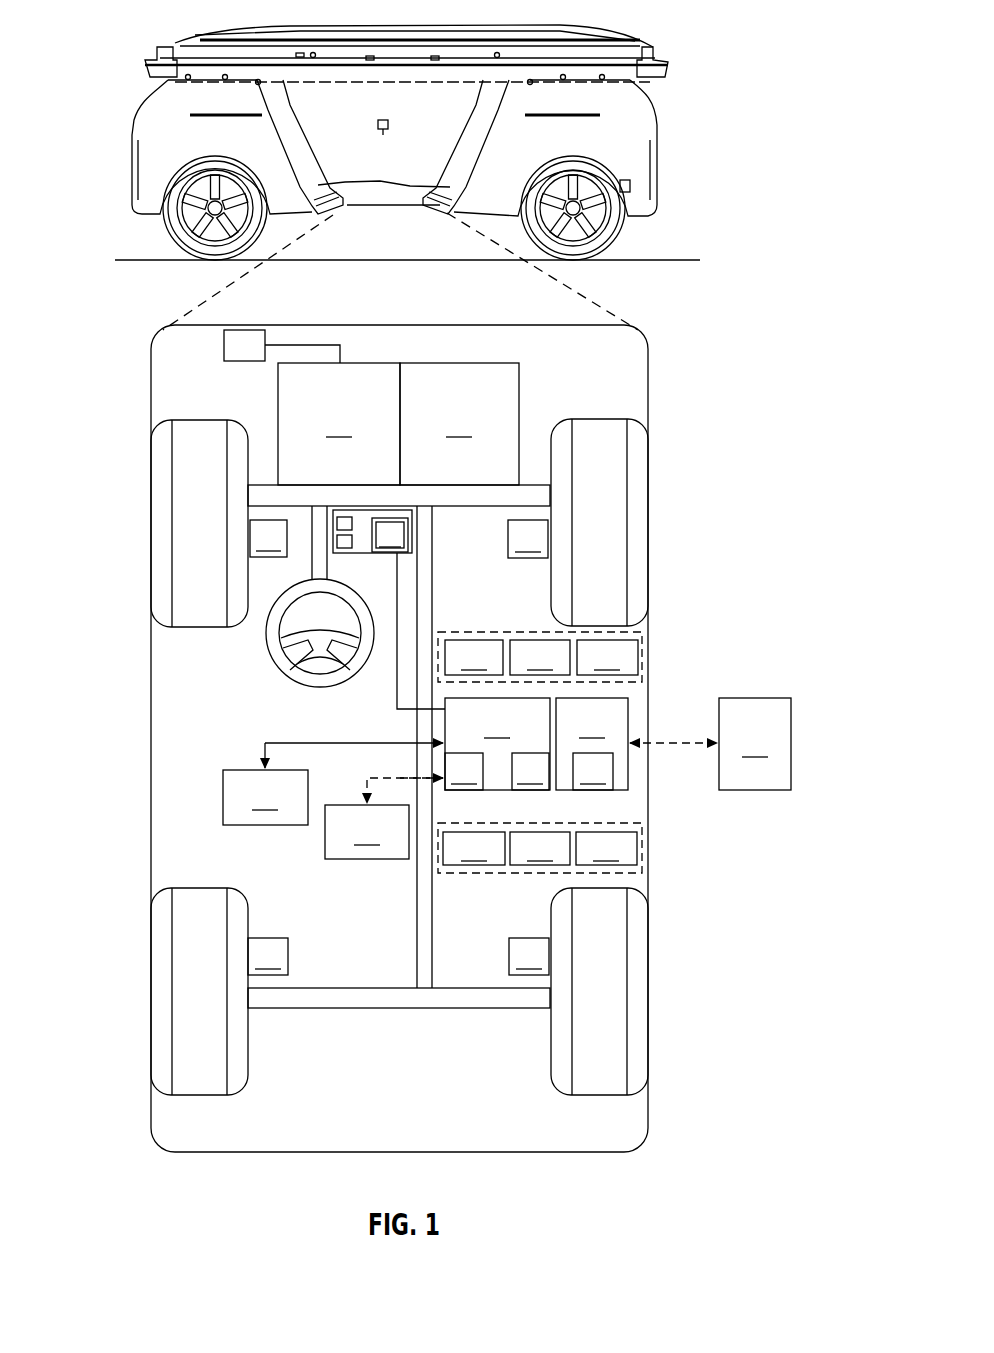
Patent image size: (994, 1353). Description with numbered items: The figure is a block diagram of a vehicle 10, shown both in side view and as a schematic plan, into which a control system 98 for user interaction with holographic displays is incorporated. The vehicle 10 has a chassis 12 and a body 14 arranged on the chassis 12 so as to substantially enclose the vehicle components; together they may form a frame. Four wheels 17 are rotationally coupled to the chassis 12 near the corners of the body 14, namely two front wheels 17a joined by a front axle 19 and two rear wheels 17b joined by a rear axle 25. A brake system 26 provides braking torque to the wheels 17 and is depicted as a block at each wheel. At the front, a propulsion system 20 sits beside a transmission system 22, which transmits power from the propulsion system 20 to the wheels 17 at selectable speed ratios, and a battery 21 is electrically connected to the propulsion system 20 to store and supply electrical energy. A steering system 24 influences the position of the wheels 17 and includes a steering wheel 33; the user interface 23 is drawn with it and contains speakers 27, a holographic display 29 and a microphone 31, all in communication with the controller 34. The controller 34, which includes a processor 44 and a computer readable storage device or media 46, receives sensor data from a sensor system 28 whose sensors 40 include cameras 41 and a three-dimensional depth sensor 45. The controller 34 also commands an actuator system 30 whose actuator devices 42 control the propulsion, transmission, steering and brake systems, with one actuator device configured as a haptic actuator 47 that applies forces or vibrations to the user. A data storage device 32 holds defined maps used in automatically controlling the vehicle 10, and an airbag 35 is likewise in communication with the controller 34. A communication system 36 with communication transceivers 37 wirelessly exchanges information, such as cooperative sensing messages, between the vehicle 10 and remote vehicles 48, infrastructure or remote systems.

The vehicle 10 is at (590, 32).
The chassis 12 is at (417, 900).
The body 14 is at (151, 711).
The front and rear wheels 17 is at (401, 748).
The front wheels 17a is at (162, 523).
The rear wheels 17b is at (162, 992).
The front axle 19 is at (497, 507).
The propulsion system 20 is at (339, 424).
The battery 21 is at (247, 330).
The transmission system 22 is at (459, 424).
The user interface 23 is at (381, 499).
The steering system 24 is at (337, 521).
The rear axle 25 is at (460, 988).
The brake system 26 is at (398, 747).
The speakers 27 is at (340, 512).
The sensor system 28 is at (540, 641).
The holographic display 29 is at (333, 540).
The actuator system 30 is at (540, 869).
The microphone 31 is at (410, 512).
The data storage device 32 is at (384, 818).
The steering wheel 33 is at (265, 632).
The controller 34 is at (497, 744).
The airbag 35 is at (333, 784).
The communication system 36 is at (592, 744).
The communication transceivers 37 is at (593, 771).
The sensors 40 is at (474, 657).
The cameras 41 is at (607, 657).
The actuator devices 42 is at (506, 848).
The processor 44 is at (464, 771).
The three-dimensional depth sensor 45 is at (540, 657).
The computer readable storage device or media 46 is at (530, 771).
The haptic actuator 47 is at (606, 848).
The remote vehicles 48 is at (710, 744).
The control system 98 is at (380, 733).